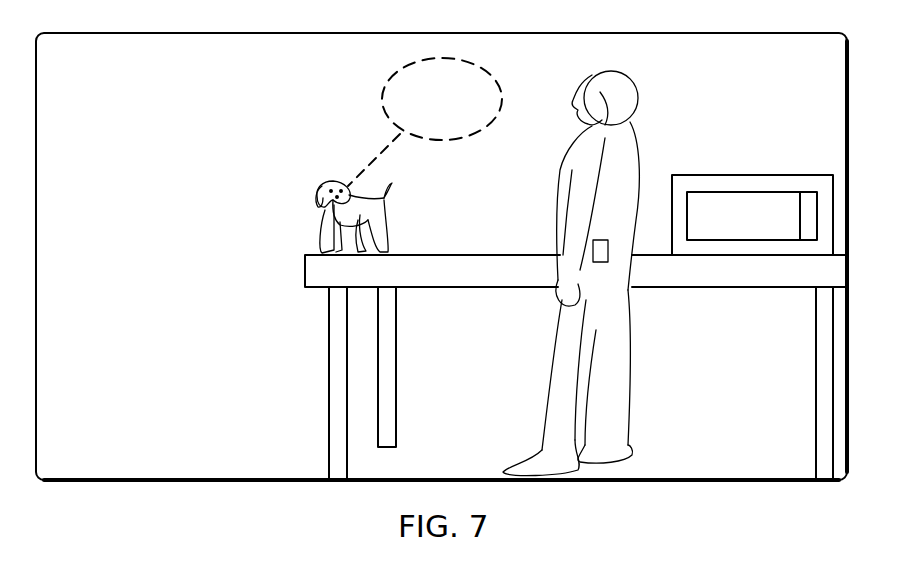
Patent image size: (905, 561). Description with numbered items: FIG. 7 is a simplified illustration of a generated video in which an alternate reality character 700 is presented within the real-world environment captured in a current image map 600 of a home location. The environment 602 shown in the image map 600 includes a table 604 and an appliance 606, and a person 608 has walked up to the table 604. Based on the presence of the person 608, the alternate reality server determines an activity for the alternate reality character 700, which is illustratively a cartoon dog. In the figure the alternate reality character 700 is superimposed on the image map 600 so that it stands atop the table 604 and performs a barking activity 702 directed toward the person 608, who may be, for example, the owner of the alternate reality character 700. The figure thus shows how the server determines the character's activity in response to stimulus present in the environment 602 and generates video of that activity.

The current image map 600 is at (448, 33).
The environment 602 is at (148, 142).
The table 604 is at (481, 255).
The appliance 606 is at (750, 175).
The person 608 is at (630, 78).
The alternate reality character 700 is at (333, 181).
The activity 702 is at (383, 90).